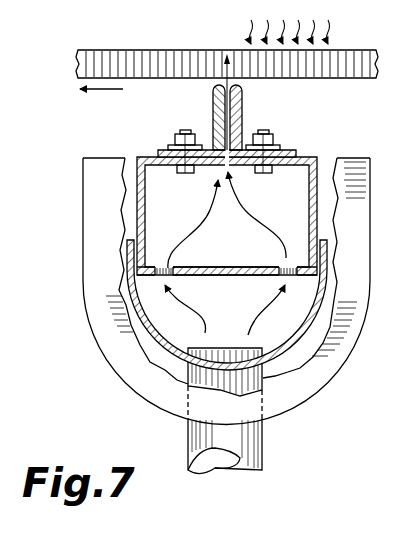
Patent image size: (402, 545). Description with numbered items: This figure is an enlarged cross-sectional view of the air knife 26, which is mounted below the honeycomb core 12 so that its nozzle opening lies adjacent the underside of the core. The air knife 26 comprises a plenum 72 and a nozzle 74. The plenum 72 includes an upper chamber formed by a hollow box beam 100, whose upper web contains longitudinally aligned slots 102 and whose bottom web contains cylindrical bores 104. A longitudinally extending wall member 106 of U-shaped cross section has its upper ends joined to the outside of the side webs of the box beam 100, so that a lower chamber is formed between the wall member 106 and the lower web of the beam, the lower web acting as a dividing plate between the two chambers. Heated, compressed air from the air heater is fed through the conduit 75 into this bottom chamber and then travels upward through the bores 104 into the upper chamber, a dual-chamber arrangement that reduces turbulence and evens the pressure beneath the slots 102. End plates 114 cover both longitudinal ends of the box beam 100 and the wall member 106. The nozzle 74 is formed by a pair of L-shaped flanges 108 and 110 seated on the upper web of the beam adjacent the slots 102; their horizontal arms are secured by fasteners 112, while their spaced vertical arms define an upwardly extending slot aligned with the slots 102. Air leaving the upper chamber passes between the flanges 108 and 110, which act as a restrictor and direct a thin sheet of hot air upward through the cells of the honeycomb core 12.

The honeycomb core 12 is at (332, 60).
The air knife 26 is at (100, 360).
The plenum 72 is at (140, 232).
The nozzle 74 is at (247, 97).
The conduit 75 is at (264, 442).
The box beam 100 is at (317, 156).
The slots 102 is at (223, 164).
The cylindrical bores 104 is at (168, 268).
The wall member 106 is at (175, 346).
The L-shaped flange 108 is at (213, 108).
The L-shaped flange 110 is at (243, 117).
The fasteners 112 is at (168, 148).
The end plates 114 is at (325, 378).